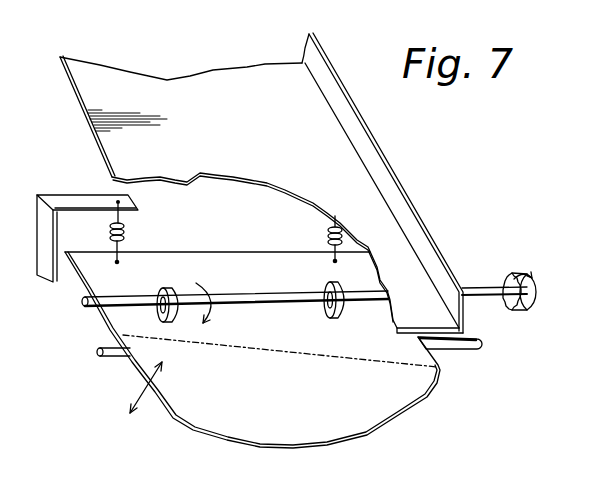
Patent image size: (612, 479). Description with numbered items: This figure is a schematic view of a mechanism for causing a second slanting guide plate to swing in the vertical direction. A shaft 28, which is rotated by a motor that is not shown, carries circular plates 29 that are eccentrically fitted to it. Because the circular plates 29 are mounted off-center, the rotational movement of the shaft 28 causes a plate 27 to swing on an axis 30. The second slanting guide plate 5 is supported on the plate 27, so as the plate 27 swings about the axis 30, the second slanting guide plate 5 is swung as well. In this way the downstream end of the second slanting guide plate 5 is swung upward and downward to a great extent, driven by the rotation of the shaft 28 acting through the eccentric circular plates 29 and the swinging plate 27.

The second slanting guide plate 5 is at (242, 76).
The plate 27 is at (176, 402).
The shaft 28 is at (480, 290).
The circular plates 29 is at (155, 313).
The axis 30 is at (115, 355).